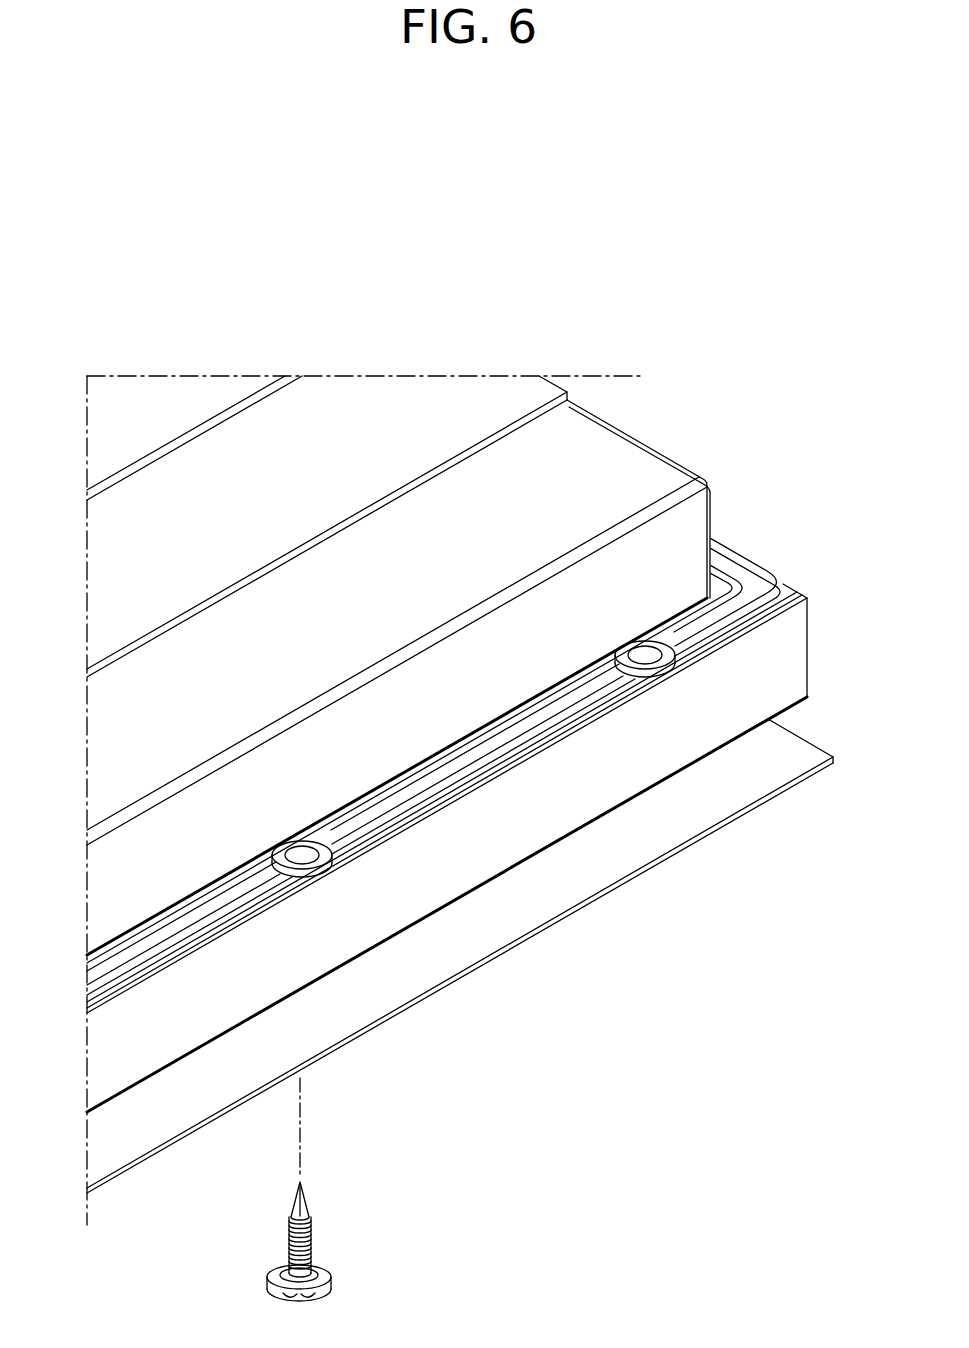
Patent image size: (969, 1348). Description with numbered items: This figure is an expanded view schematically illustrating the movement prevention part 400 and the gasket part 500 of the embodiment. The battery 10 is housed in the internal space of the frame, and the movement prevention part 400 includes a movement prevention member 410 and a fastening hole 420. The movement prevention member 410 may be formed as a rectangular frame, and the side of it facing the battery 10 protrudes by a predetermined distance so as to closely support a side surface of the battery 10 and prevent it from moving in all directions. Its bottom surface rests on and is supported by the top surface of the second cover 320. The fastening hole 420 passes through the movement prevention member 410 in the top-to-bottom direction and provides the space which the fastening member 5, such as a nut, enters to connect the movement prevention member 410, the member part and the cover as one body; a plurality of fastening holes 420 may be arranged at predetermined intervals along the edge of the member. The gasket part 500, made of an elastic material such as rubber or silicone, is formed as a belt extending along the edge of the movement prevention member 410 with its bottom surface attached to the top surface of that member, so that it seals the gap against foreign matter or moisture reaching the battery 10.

The battery 10 is at (505, 490).
The fastening member 5 is at (308, 1242).
The second cover 320 is at (455, 945).
The movement prevention part 400 is at (465, 839).
The movement prevention member 410 is at (727, 708).
The fastening hole 420 is at (640, 657).
The gasket part 500 is at (757, 560).